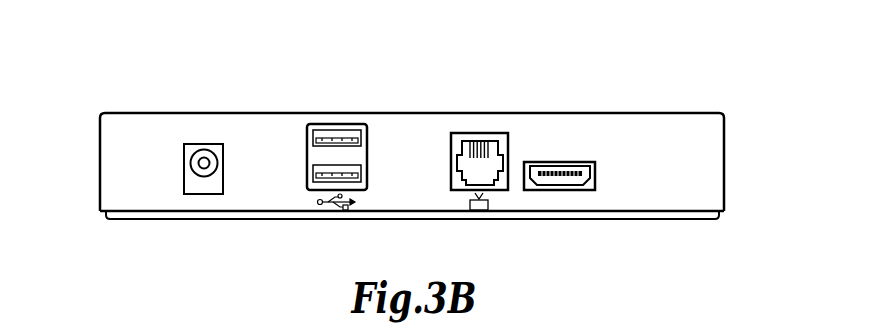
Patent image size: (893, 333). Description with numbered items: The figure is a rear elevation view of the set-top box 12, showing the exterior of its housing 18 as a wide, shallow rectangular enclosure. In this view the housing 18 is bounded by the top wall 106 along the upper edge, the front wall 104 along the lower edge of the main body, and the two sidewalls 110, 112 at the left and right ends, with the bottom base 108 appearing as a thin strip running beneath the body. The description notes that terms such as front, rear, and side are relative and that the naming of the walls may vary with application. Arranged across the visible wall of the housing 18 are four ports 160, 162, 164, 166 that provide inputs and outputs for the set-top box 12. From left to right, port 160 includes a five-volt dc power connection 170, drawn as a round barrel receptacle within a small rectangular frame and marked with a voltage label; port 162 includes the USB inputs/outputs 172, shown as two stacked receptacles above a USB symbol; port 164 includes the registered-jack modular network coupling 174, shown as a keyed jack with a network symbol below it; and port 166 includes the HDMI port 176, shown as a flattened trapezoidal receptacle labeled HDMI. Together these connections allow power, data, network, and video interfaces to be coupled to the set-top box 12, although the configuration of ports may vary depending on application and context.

The set-top box 12 is at (122, 100).
The housing 18 is at (698, 106).
The front wall 104 is at (133, 202).
The top wall 106 is at (170, 113).
The bottom base 108 is at (260, 220).
The sidewall 110 is at (100, 164).
The sidewall 112 is at (724, 161).
The port 160 is at (216, 147).
The port 162 is at (335, 124).
The port 164 is at (482, 133).
The port 166 is at (558, 162).
The 5V dc power connection 170 is at (203, 194).
The USB inputs/outputs 172 is at (315, 192).
The RJ-45 coupling 174 is at (497, 183).
The HDMI port 176 is at (588, 188).